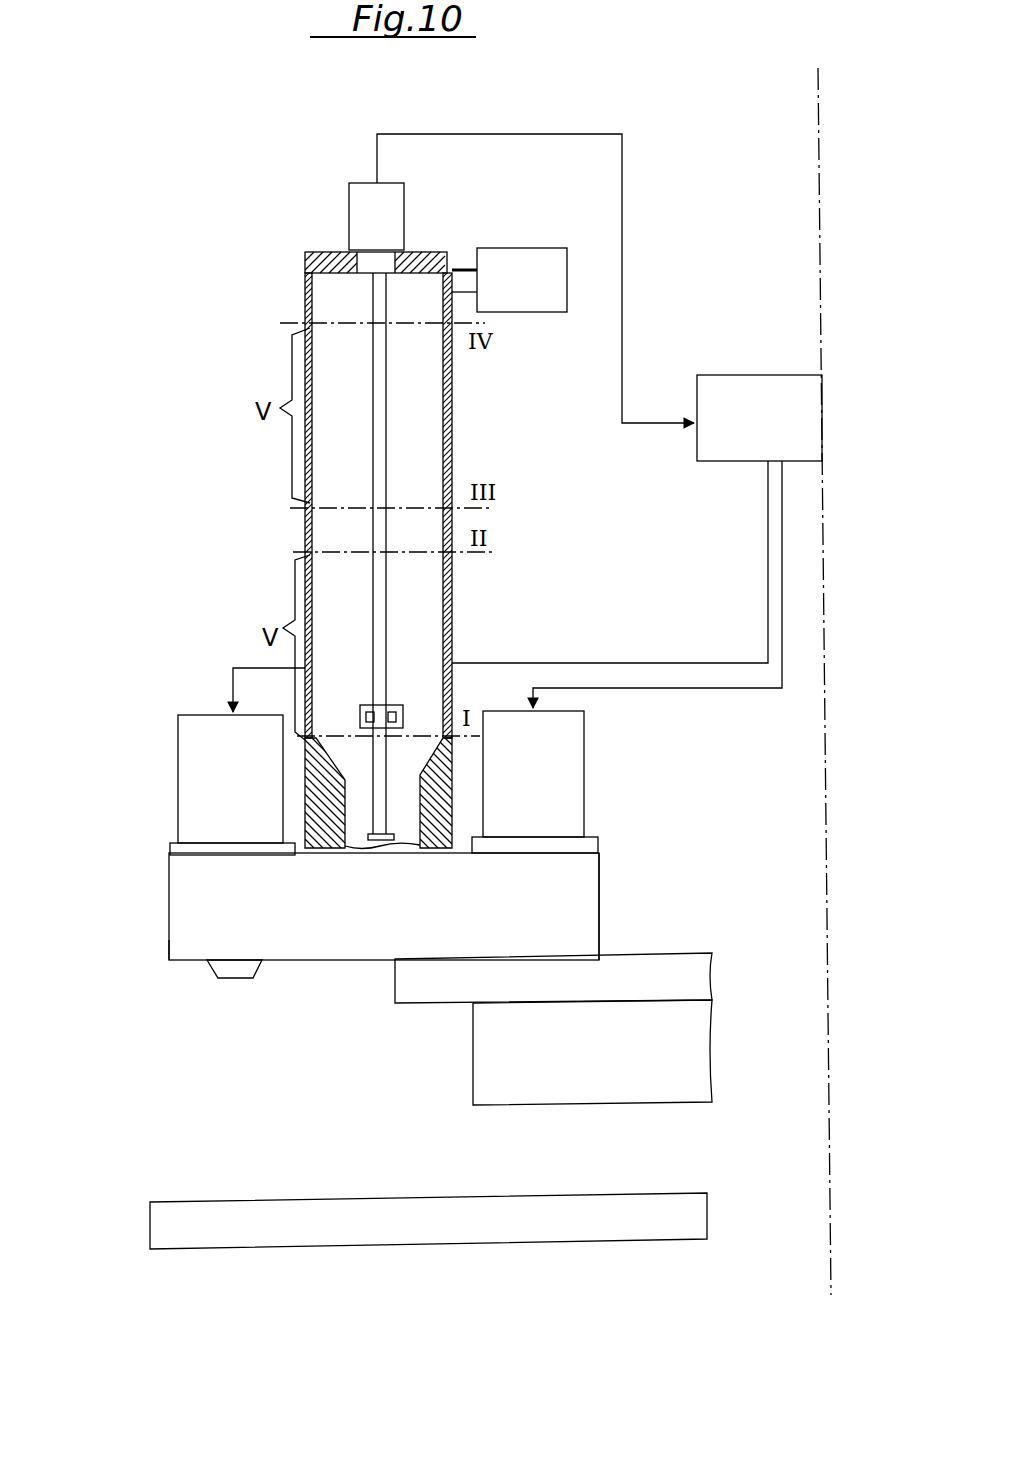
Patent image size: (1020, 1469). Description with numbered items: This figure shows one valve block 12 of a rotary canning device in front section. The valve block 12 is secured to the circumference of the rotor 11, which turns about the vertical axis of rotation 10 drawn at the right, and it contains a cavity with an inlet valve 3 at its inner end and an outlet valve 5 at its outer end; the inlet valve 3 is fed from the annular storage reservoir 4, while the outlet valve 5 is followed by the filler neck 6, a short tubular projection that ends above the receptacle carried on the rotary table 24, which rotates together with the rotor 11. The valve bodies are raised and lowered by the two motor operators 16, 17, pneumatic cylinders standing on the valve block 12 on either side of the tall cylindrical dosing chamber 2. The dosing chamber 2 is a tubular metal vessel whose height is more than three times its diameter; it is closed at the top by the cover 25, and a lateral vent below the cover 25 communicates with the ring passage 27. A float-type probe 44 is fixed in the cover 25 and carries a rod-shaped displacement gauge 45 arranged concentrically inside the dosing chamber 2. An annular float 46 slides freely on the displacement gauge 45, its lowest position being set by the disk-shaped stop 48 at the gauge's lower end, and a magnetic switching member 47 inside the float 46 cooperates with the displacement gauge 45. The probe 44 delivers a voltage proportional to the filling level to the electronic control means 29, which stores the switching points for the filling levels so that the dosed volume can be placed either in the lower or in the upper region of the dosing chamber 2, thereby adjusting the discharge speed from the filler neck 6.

The axis of rotation 10 is at (814, 92).
The float-type probe 44 is at (373, 195).
The cover 25 is at (333, 252).
The ring passage 27 is at (516, 270).
The displacement gauge 45 is at (377, 298).
The electronic control means 29 is at (738, 415).
The dosing chamber 2 is at (308, 537).
The annular float 46 is at (365, 705).
The magnetic switching member 47 is at (398, 705).
The motor operator 17 is at (246, 795).
The motor operator 16 is at (548, 785).
The outlet valve 5 is at (230, 903).
The inlet valve 3 is at (556, 896).
The valve block 12 is at (178, 952).
The rotor 11 is at (678, 973).
The filler neck 6 is at (225, 968).
The disk-shaped stop 48 is at (380, 842).
The storage reservoir 4 is at (688, 1073).
The rotary table 24 is at (182, 1222).